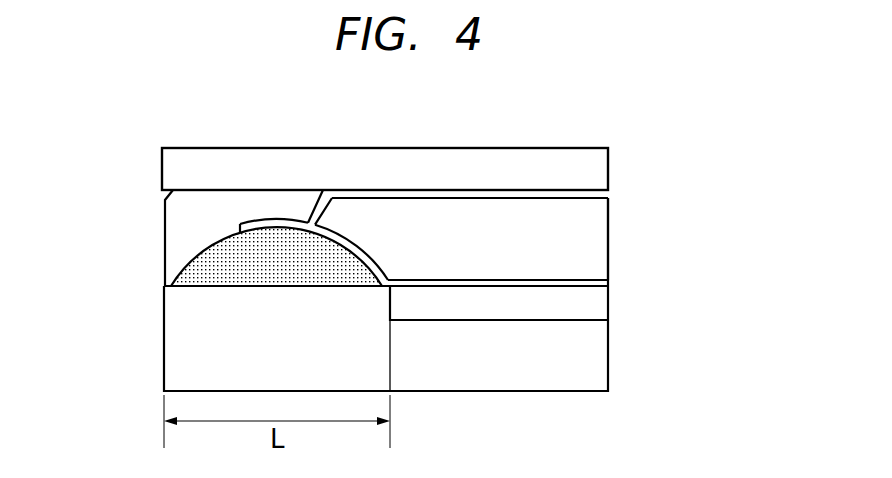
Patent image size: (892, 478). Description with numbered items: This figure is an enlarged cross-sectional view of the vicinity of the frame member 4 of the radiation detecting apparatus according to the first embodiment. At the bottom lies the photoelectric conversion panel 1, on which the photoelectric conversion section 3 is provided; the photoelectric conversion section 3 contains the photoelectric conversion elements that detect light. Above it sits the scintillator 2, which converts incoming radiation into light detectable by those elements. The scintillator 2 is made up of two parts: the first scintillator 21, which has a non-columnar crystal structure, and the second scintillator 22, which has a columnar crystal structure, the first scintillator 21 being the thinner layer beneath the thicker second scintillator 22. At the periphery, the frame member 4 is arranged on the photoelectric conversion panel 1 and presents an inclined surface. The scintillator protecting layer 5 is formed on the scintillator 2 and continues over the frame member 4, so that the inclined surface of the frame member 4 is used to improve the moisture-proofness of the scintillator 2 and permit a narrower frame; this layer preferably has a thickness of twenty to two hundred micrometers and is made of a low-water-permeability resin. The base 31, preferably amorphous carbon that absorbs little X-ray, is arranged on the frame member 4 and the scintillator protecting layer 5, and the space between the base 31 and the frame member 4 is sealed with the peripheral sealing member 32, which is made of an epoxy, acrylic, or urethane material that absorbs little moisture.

The photoelectric conversion panel 1 is at (172, 343).
The scintillator 2 is at (687, 203).
The photoelectric conversion section 3 is at (600, 305).
The frame member 4 is at (196, 265).
The scintillator protecting layer 5 is at (538, 193).
The first scintillator 21 is at (593, 280).
The second scintillator 22 is at (600, 227).
The base 31 is at (487, 157).
The peripheral sealing member 32 is at (175, 219).